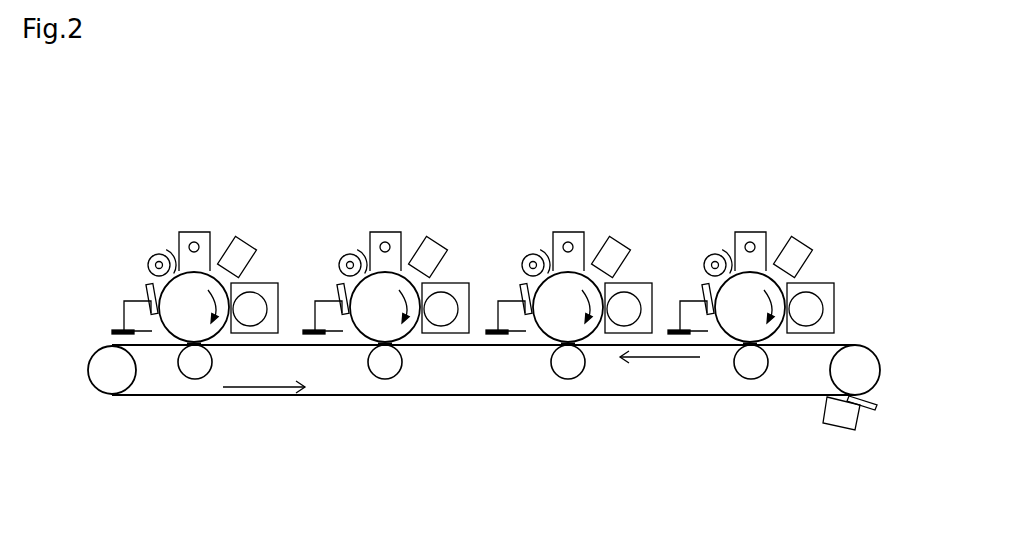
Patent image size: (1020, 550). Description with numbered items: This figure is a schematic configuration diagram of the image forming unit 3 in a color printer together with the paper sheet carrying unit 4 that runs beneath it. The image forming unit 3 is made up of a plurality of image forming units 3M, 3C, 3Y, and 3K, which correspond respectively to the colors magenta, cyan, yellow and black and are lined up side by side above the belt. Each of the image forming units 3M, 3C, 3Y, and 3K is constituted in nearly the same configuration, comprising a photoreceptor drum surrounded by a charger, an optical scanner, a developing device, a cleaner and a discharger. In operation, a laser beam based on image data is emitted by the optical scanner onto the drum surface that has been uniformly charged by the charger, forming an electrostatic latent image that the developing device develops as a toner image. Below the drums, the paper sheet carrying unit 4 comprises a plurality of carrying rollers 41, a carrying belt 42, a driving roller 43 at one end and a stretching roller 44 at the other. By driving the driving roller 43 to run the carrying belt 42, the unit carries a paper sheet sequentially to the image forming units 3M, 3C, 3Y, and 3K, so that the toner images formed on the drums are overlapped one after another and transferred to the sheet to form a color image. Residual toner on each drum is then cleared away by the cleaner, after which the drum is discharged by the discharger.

The image forming unit 3 is at (120, 115).
The image forming unit 3K is at (227, 240).
The image forming unit 3Y is at (418, 240).
The image forming unit 3C is at (602, 240).
The image forming unit 3M is at (787, 240).
The paper sheet carrying unit 4 is at (339, 418).
The carrying roller 41 is at (195, 379).
The carrying belt 42 is at (698, 397).
The driving roller 43 is at (112, 394).
The stretching roller 44 is at (830, 372).